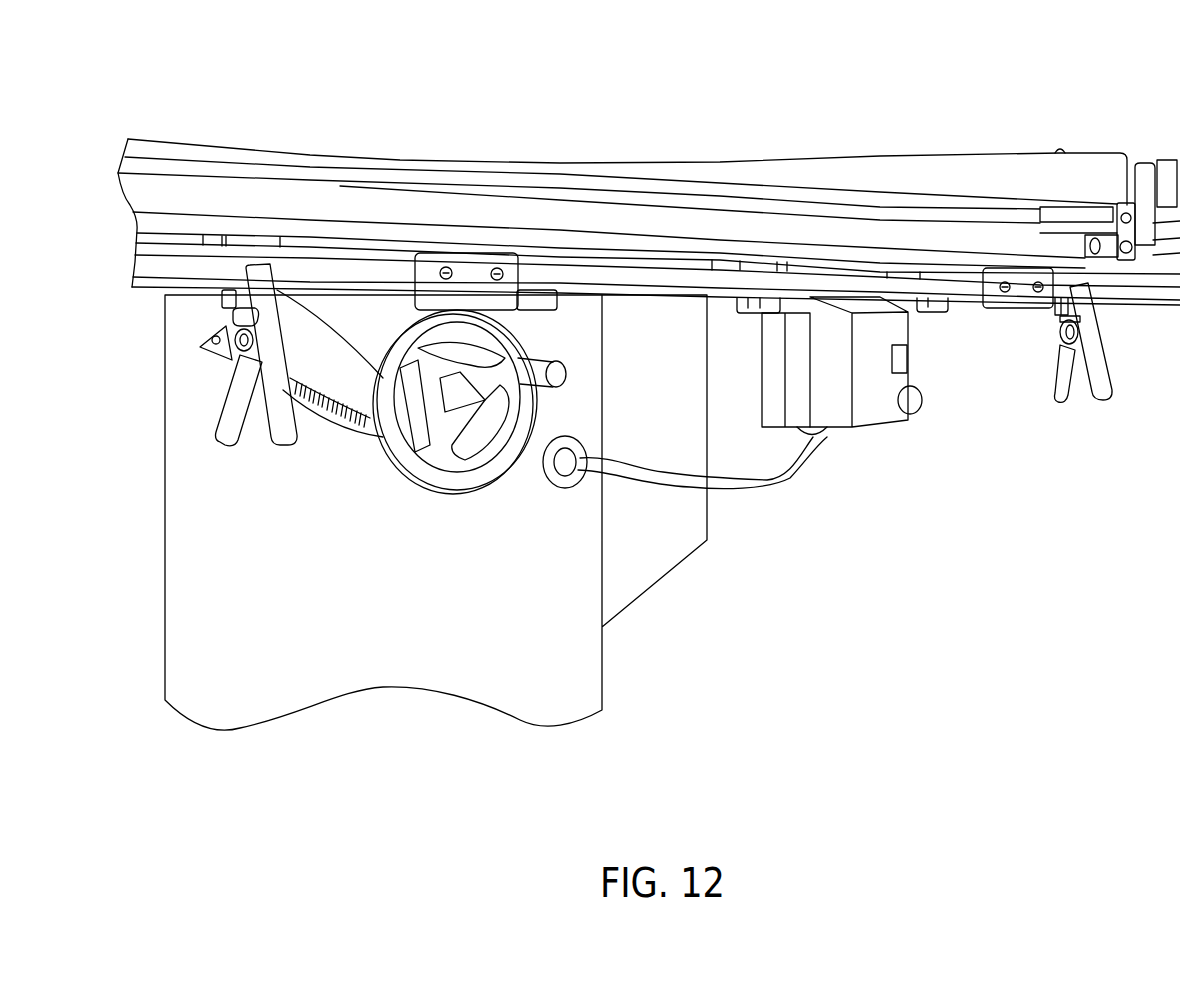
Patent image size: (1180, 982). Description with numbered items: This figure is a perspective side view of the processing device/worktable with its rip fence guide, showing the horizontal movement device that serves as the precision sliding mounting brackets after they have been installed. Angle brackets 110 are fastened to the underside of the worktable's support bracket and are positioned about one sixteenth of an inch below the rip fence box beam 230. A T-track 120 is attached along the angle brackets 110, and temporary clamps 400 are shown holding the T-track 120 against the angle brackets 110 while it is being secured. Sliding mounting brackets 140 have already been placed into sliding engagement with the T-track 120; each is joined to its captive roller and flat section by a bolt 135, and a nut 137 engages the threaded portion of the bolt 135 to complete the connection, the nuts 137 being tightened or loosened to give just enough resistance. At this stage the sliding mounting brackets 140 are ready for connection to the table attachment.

The angle bracket 110 is at (232, 301).
The T-track 120 is at (313, 267).
The bolt 135 is at (413, 252).
The nut 137 is at (741, 279).
The sliding mounting bracket 140 is at (497, 270).
The rip fence box beam 230 is at (237, 182).
The temporary clamp 400 is at (230, 440).